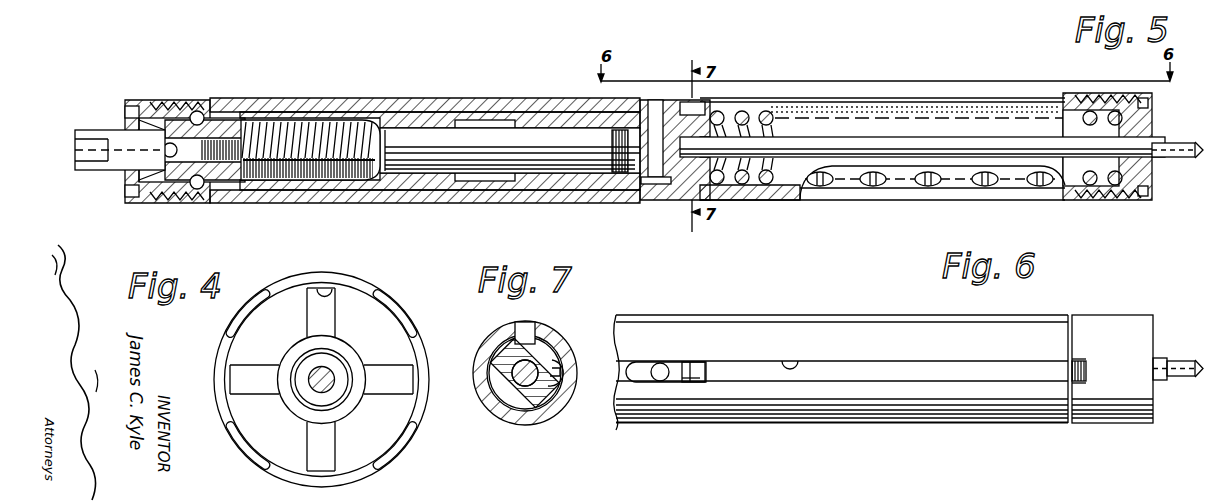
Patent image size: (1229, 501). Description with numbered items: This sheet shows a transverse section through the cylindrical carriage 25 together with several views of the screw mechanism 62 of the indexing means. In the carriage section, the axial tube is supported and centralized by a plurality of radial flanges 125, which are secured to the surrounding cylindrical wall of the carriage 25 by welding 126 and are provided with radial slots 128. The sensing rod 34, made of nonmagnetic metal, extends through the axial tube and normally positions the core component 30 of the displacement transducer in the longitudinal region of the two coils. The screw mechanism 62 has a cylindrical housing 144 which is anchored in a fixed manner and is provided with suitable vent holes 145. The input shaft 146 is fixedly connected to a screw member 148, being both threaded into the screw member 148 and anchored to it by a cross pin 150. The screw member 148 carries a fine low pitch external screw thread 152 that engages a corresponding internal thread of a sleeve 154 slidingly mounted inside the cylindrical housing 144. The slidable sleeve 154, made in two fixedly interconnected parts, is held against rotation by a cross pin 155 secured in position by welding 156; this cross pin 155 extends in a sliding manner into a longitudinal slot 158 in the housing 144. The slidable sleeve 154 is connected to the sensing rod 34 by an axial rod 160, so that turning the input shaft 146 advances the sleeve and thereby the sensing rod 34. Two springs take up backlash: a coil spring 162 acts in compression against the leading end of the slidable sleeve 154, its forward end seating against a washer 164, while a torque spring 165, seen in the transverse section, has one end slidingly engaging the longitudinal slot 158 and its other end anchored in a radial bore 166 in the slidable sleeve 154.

In FIG. 4, the cylindrical carriage 25 is at (361, 289).
In FIG. 4, the core component 30 is at (334, 366).
In FIG. 5, the sensing rod 34 is at (1182, 142).
In FIG. 4, the sensing rod 34 is at (312, 390).
In FIG. 6, the sensing rod 34 is at (1180, 359).
In FIG. 5, the screw mechanism 62 is at (466, 98).
In FIG. 4, the radial flanges 125 is at (375, 341).
In FIG. 4, the welding 126 is at (393, 312).
In FIG. 4, the radial slots 128 is at (322, 292).
In FIG. 5, the cylindrical housing 144 is at (378, 114).
In FIG. 5, the vent holes 145 is at (930, 187).
In FIG. 5, the input shaft 146 is at (103, 130).
In FIG. 5, the screw member 148 is at (290, 125).
In FIG. 5, the cross pin 150 is at (175, 183).
In FIG. 5, the external screw thread 152 is at (305, 181).
In FIG. 5, the slidable sleeve 154 is at (425, 176).
In FIG. 7, the slidable sleeve 154 is at (500, 409).
In FIG. 5, the cross pin 155 is at (656, 100).
In FIG. 6, the cross pin 155 is at (662, 365).
In FIG. 5, the welding 156 is at (650, 188).
In FIG. 5, the longitudinal slot 158 is at (805, 102).
In FIG. 6, the longitudinal slot 158 is at (805, 361).
In FIG. 5, the axial rod 160 is at (938, 146).
In FIG. 7, the axial rod 160 is at (530, 390).
In FIG. 5, the coil spring 162 is at (767, 110).
In FIG. 5, the washer 164 is at (1148, 130).
In FIG. 7, the torque spring 165 is at (502, 366).
In FIG. 6, the torque spring 165 is at (695, 378).
In FIG. 7, the radial bore 166 is at (554, 364).